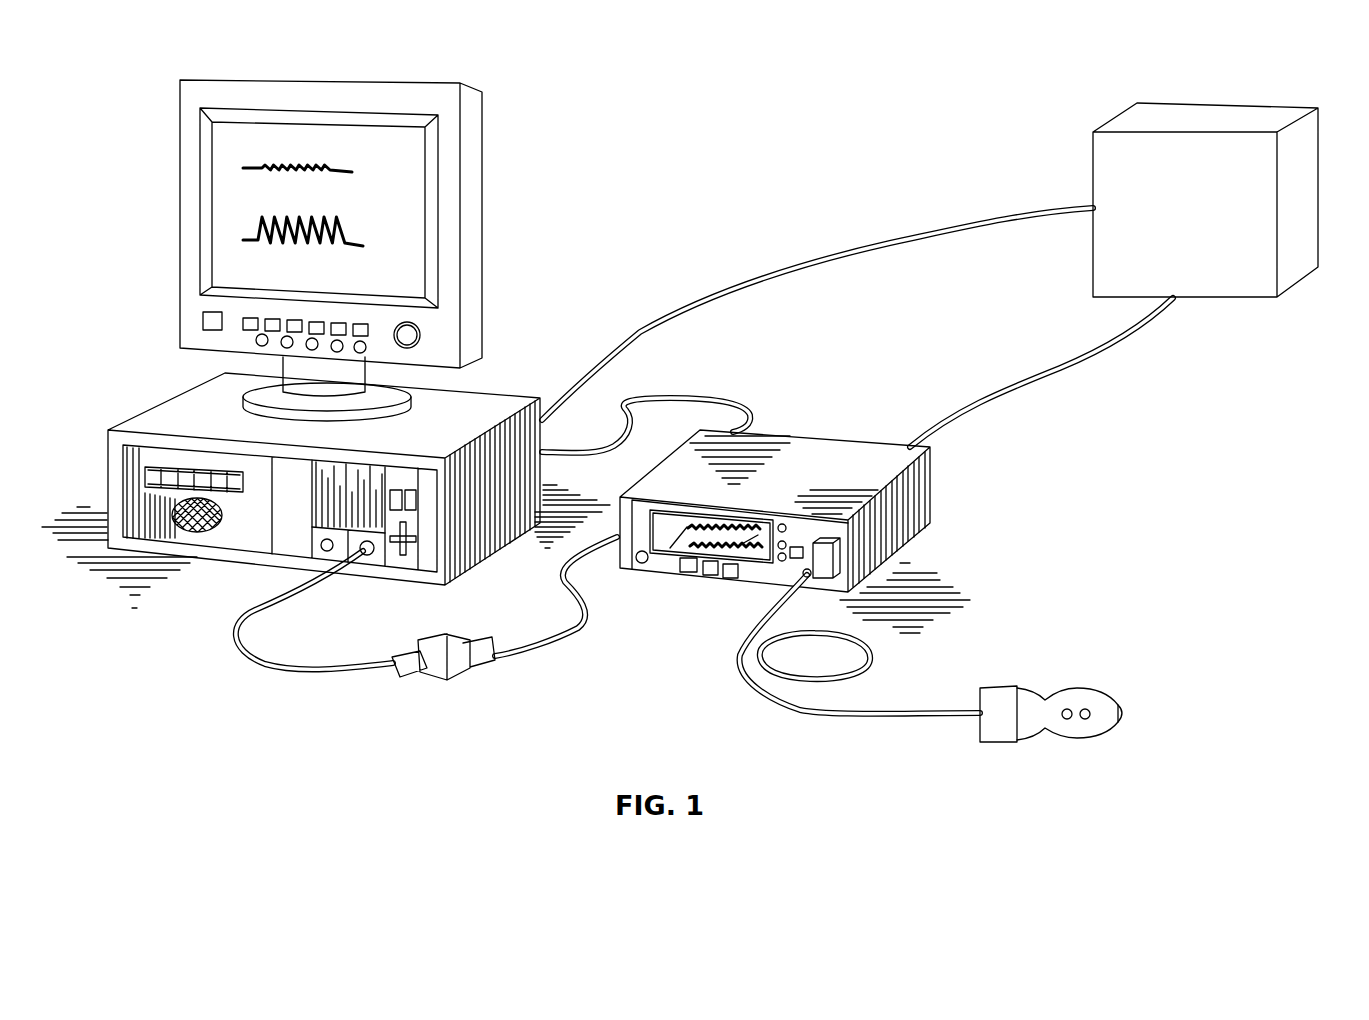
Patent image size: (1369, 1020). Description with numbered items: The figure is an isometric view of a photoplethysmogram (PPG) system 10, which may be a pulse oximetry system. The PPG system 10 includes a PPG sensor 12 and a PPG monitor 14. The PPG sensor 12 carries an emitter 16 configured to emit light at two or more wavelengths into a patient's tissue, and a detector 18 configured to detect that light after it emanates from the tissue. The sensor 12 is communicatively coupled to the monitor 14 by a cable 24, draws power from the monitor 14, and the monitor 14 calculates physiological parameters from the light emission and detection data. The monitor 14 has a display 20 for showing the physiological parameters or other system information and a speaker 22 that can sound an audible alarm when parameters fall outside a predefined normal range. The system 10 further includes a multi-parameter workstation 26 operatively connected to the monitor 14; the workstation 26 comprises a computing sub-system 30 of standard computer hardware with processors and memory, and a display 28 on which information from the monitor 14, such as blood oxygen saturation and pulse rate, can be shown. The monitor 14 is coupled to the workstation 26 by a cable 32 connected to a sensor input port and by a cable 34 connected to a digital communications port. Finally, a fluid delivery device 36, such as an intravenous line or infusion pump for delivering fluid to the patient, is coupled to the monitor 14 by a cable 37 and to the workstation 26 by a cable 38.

The PPG system 10 is at (775, 253).
The PPG sensor 12 is at (1090, 720).
The PPG monitor 14 is at (771, 520).
The emitter 16 is at (1068, 720).
The detector 18 is at (1090, 728).
The display 20 is at (673, 557).
The speaker 22 is at (640, 563).
The cable 24 is at (770, 700).
The multi-parameter workstation 26 is at (333, 250).
The display 28 is at (222, 220).
The computing sub-system 30 is at (192, 532).
The cable 32 is at (525, 653).
The cable 34 is at (680, 398).
The fluid delivery device 36 is at (1300, 106).
The cable 37 is at (1100, 347).
The cable 38 is at (1045, 208).